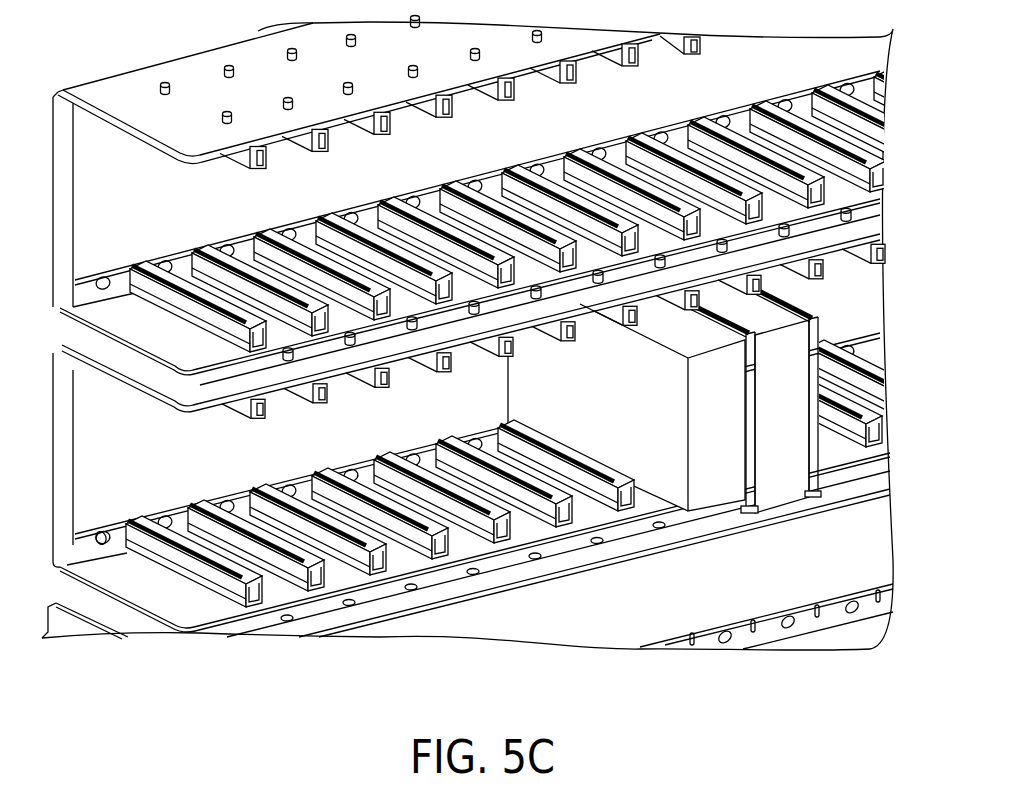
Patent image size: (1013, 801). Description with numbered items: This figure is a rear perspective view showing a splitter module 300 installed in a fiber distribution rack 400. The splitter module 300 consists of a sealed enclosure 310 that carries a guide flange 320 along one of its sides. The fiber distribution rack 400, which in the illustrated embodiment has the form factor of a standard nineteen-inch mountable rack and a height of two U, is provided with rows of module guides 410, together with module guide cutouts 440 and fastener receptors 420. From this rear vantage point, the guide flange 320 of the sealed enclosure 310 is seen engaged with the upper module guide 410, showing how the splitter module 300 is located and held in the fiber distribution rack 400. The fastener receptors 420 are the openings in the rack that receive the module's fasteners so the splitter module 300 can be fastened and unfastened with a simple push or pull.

The splitter module 300 is at (535, 381).
The sealed enclosure 310 is at (723, 480).
The guide flange 320 is at (757, 335).
The fiber distribution rack 400 is at (84, 349).
The module guide 410 is at (512, 340).
The fastener receptor 420 is at (107, 526).
The module guide cutout 440 is at (213, 497).